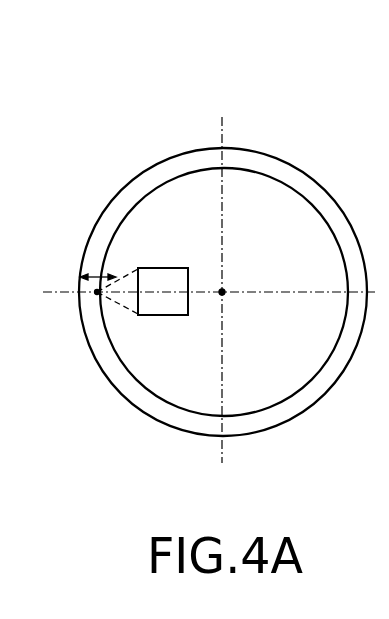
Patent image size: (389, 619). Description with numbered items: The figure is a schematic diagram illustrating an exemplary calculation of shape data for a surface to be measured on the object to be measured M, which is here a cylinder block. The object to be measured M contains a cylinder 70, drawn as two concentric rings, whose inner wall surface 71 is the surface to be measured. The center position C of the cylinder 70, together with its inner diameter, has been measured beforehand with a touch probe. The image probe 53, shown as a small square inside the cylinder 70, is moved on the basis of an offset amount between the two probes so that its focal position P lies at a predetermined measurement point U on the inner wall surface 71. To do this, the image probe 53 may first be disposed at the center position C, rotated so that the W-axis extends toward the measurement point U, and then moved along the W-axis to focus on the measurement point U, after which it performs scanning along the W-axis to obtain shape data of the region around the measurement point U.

The cylinder 70 is at (170, 151).
The inner wall surface 71 is at (136, 198).
The image probe 53 is at (163, 302).
The focal position P is at (97, 294).
The measurement point U is at (96, 292).
The center position C is at (224, 288).
The object to be measured M is at (258, 128).